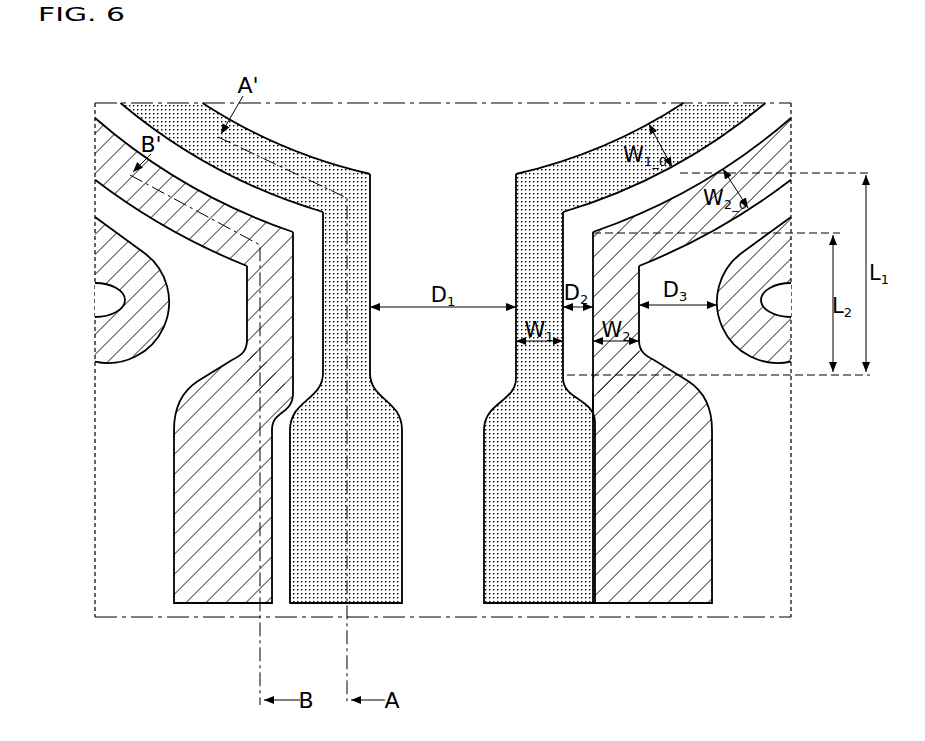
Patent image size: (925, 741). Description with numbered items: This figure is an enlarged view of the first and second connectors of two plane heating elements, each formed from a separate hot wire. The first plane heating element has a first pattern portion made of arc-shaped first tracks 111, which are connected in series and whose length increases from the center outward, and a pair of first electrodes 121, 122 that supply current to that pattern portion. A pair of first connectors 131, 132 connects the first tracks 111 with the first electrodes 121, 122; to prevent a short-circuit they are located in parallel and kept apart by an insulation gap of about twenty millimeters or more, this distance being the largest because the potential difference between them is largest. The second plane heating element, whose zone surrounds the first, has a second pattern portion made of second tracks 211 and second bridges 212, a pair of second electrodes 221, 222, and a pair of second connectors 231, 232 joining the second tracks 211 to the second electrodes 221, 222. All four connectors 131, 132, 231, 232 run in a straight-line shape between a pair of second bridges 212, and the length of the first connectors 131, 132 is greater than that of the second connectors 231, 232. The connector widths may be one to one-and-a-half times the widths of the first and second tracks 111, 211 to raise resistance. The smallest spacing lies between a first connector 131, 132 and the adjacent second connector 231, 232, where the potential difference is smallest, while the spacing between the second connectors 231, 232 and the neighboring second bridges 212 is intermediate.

The first tracks 111 is at (206, 120).
The first connector 131 is at (363, 243).
The first electrode 121 is at (383, 606).
The second tracks 211 is at (110, 160).
The second bridges 212 is at (143, 288).
The second connector 231 is at (246, 319).
The second electrode 221 is at (222, 606).
The first connector 132 is at (522, 351).
The first electrode 122 is at (539, 596).
The second connector 232 is at (639, 327).
The second electrode 222 is at (664, 596).